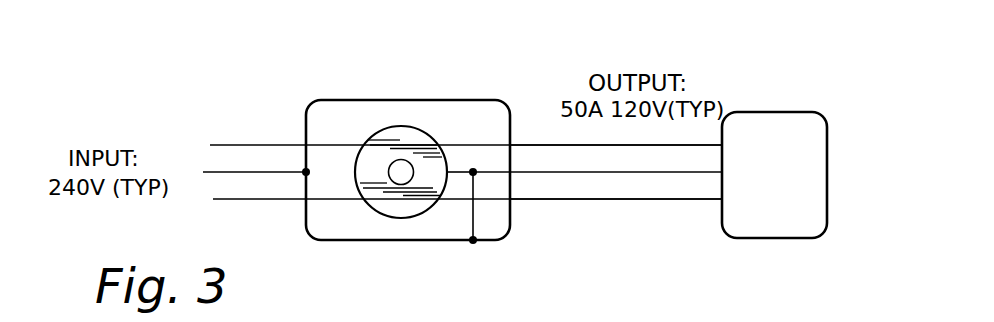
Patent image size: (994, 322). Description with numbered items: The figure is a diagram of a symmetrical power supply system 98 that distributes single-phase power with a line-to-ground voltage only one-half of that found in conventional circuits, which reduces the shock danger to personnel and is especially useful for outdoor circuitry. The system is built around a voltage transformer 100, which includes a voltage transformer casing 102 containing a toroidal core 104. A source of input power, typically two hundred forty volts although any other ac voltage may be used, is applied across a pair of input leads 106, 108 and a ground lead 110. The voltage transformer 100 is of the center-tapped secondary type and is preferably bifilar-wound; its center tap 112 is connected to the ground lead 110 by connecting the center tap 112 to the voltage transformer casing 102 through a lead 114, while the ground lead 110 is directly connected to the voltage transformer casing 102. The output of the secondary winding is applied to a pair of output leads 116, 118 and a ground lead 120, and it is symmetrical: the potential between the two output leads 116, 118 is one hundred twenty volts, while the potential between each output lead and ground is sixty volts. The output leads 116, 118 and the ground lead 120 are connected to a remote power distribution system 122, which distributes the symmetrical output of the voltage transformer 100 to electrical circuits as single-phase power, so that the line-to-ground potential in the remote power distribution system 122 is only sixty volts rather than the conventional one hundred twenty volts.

The symmetrical power supply system 98 is at (386, 252).
The voltage transformer 100 is at (326, 84).
The voltage transformer casing 102 is at (350, 100).
The toroidal core 104 is at (412, 127).
The input lead 106 is at (238, 144).
The input lead 108 is at (262, 200).
The ground lead 110 is at (218, 172).
The center tap 112 is at (476, 169).
The lead 114 is at (473, 218).
The output lead 116 is at (530, 145).
The output lead 118 is at (547, 201).
The ground lead 120 is at (595, 175).
The remote power distribution system 122 is at (787, 112).